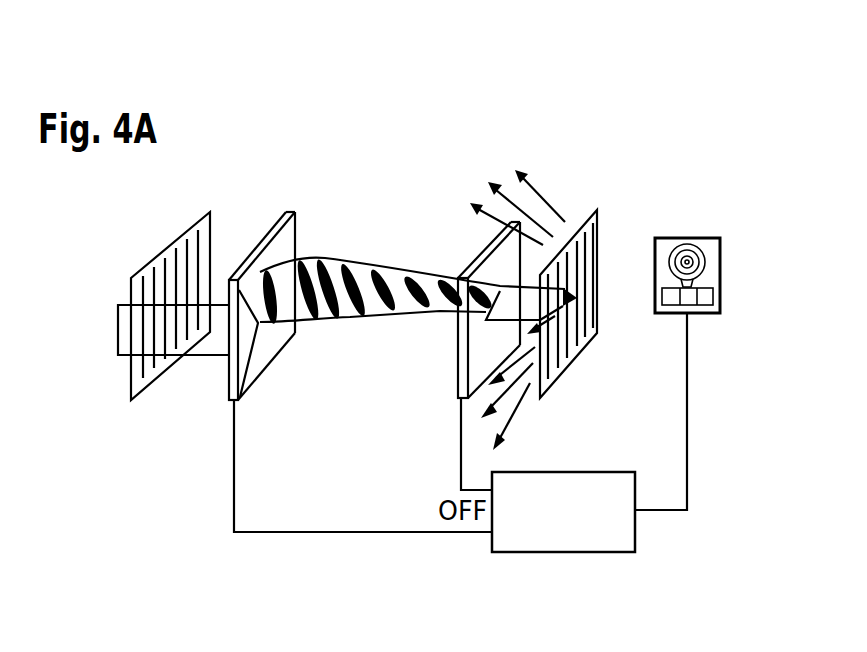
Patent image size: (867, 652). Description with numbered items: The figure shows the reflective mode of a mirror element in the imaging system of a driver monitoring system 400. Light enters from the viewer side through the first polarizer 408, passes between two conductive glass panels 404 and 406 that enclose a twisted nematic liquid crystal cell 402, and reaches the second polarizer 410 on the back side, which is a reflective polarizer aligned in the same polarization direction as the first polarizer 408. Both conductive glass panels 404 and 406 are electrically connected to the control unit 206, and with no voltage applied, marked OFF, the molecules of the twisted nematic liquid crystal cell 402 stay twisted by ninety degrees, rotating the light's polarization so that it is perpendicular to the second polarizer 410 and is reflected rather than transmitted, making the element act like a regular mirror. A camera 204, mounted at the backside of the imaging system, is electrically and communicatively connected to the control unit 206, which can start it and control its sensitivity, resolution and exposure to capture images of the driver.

The driver monitoring system 400 is at (560, 150).
The twisted nematic liquid crystal cell 402 is at (372, 262).
The conductive glass panel 404 is at (228, 388).
The conductive glass panel 406 is at (455, 377).
The first polarizer 408 is at (131, 385).
The second polarizer 410 is at (567, 365).
The camera 204 is at (720, 262).
The control unit 206 is at (582, 552).